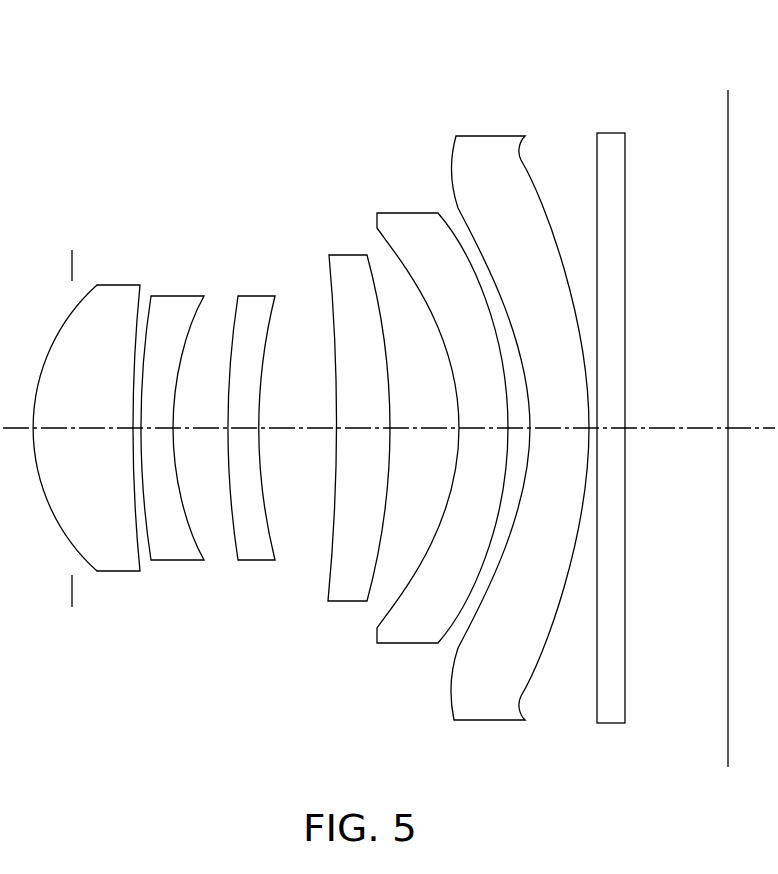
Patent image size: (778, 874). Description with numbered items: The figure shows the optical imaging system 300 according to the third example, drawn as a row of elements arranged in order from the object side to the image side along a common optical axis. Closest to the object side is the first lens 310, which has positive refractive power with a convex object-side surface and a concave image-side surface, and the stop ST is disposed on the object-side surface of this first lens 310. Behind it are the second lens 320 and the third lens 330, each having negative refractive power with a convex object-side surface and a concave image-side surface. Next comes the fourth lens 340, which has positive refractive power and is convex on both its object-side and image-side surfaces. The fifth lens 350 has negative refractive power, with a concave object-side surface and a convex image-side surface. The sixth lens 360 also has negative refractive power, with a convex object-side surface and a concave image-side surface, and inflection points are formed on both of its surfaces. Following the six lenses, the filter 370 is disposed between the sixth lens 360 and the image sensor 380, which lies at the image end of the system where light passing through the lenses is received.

The optical imaging system 300 is at (351, 104).
The stop ST is at (71, 264).
The first lens 310 is at (117, 285).
The second lens 320 is at (176, 296).
The third lens 330 is at (257, 296).
The fourth lens 340 is at (347, 255).
The fifth lens 350 is at (407, 213).
The sixth lens 360 is at (487, 136).
The filter 370 is at (612, 133).
The image sensor 380 is at (727, 118).